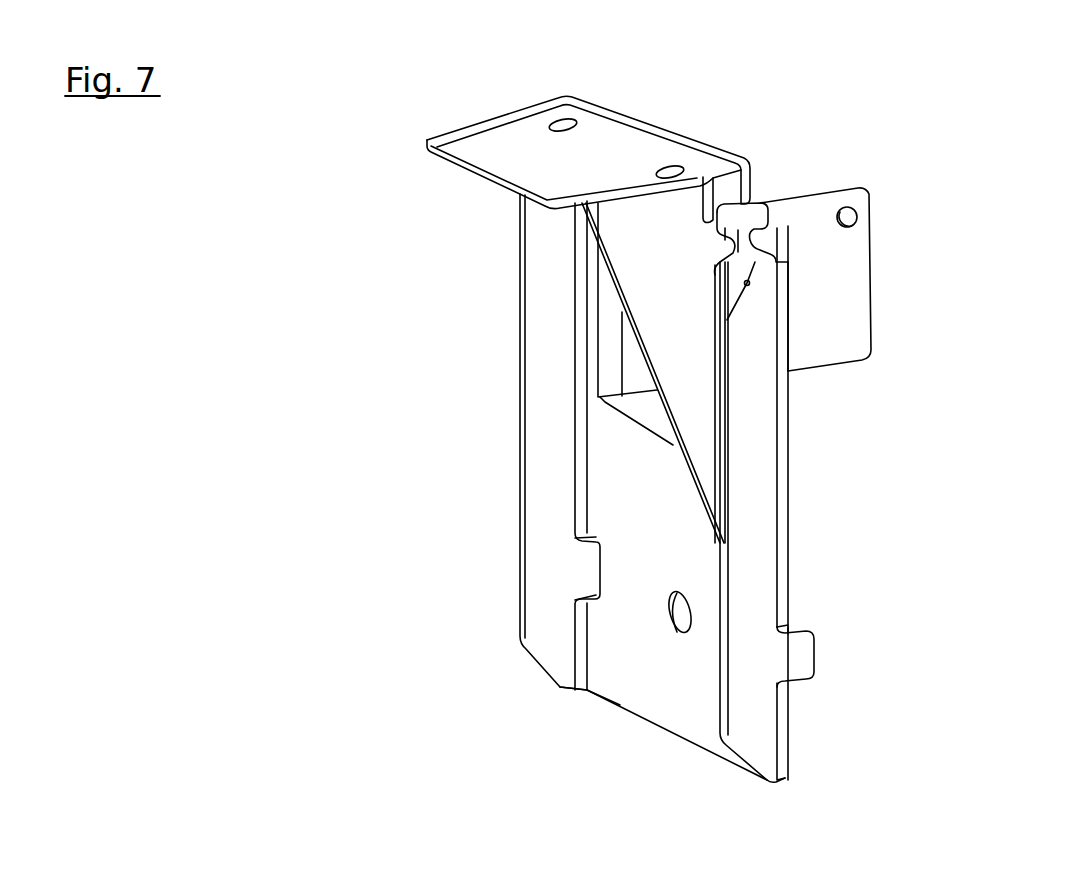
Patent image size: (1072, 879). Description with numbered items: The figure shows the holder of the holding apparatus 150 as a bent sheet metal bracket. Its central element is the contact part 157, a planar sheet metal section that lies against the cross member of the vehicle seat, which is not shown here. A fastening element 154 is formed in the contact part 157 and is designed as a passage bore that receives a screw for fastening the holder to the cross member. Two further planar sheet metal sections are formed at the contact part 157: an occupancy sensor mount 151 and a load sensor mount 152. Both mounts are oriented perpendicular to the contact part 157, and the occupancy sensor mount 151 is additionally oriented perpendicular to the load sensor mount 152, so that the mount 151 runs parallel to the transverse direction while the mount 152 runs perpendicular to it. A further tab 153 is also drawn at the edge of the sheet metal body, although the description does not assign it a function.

The holding apparatus 150 is at (987, 178).
The occupancy sensor mount 151 is at (510, 133).
The load sensor mount 152 is at (827, 303).
The locking tab 153 is at (817, 650).
The fastening element 154 is at (670, 628).
The contact part 157 is at (607, 670).